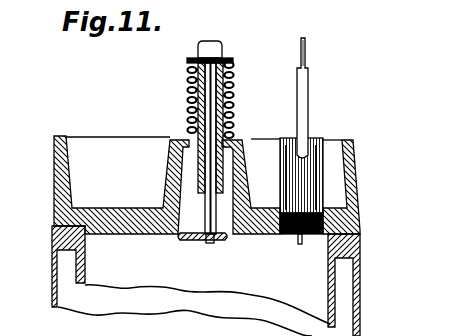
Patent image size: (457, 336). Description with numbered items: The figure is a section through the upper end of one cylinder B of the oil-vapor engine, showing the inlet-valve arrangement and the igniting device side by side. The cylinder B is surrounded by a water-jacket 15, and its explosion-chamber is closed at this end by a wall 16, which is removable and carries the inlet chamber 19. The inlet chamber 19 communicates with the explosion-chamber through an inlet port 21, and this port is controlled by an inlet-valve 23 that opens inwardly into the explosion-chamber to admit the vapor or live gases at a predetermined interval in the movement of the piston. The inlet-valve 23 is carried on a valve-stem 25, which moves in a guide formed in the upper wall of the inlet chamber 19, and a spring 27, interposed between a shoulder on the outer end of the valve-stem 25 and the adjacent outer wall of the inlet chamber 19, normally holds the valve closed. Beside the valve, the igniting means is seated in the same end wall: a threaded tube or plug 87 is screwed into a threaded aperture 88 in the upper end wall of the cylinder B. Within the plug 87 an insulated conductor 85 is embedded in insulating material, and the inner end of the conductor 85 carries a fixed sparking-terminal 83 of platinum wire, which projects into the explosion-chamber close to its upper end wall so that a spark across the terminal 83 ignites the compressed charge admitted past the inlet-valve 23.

The water-jacket 15 is at (67, 277).
The wall 16 is at (122, 237).
The inlet chamber 19 is at (186, 188).
The inlet port 21 is at (178, 240).
The inlet-valve 23 is at (210, 244).
The valve-stem 25 is at (208, 110).
The spring 27 is at (234, 105).
The sparking-terminal 83 is at (300, 245).
The insulated conductor 85 is at (309, 53).
The threaded tube or plug 87 is at (327, 191).
The threaded aperture 88 is at (357, 223).
The cylinder B is at (352, 291).